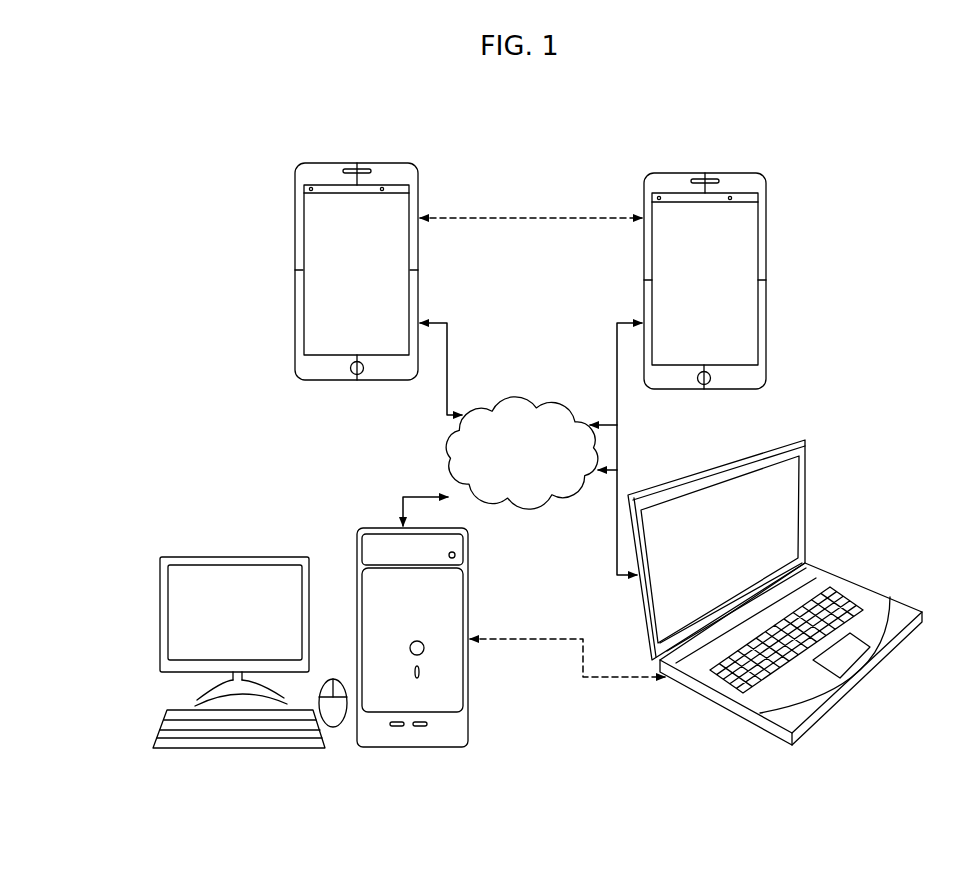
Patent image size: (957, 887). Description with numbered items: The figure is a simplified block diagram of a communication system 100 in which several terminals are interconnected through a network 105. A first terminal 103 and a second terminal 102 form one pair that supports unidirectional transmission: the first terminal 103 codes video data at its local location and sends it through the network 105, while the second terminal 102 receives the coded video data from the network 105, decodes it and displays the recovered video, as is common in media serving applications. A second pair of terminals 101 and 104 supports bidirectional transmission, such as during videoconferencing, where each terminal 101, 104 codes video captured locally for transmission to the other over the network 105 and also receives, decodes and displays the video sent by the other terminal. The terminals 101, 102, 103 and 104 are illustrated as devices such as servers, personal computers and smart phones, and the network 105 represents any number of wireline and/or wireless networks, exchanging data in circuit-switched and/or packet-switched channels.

The communication system 100 is at (177, 140).
The terminal 101 is at (331, 271).
The second terminal 102 is at (468, 717).
The first terminal 103 is at (640, 597).
The terminal 104 is at (675, 281).
The network 105 is at (528, 403).